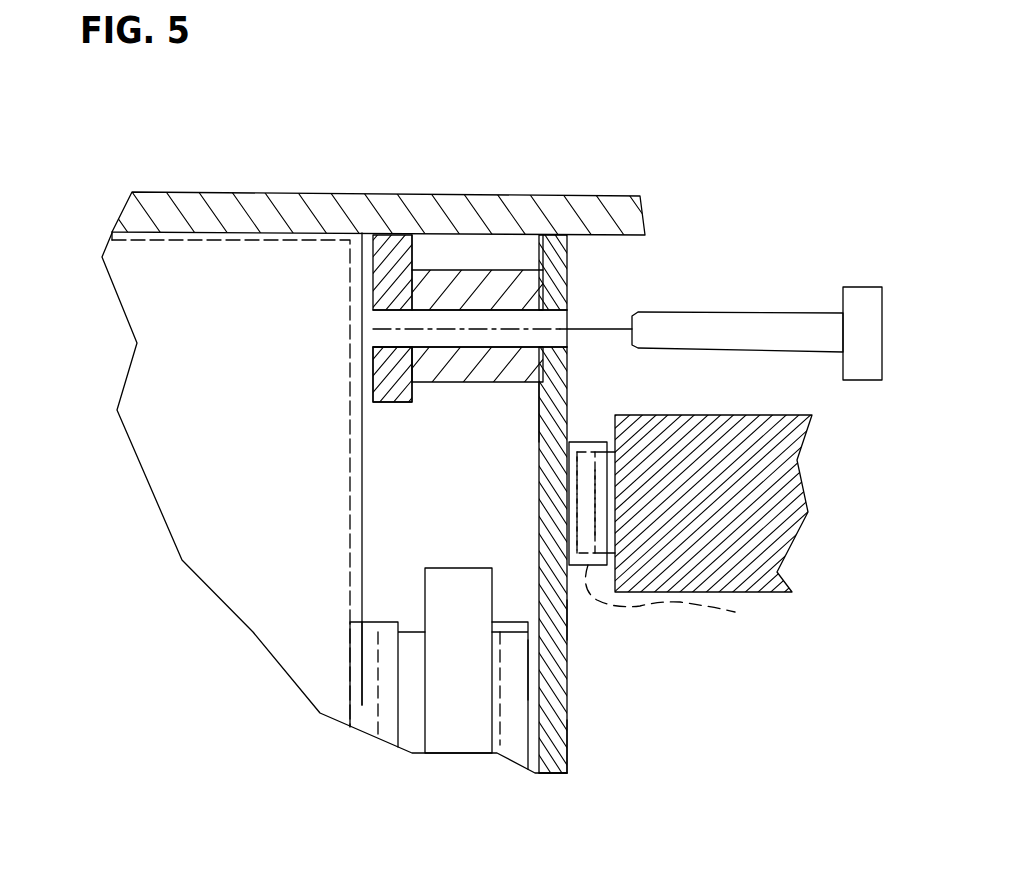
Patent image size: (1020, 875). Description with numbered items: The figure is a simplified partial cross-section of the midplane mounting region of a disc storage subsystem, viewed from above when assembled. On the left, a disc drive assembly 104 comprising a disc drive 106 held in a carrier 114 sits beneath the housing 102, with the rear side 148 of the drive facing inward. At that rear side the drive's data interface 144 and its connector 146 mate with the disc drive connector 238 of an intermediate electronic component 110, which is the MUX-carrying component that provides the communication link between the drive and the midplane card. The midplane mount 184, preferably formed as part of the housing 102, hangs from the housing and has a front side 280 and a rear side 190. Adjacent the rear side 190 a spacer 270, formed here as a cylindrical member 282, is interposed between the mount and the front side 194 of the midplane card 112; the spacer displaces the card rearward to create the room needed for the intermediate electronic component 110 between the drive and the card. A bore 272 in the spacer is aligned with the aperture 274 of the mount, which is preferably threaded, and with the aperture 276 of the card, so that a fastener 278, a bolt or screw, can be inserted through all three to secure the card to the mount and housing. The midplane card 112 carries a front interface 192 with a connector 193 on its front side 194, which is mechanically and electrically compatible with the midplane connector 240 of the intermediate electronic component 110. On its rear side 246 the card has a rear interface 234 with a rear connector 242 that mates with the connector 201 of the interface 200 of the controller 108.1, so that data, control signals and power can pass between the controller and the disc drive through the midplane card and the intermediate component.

The housing 102 is at (240, 193).
The disc drive carrier 114 is at (112, 234).
The disc drive assembly 104 is at (105, 248).
The disc drive 106 is at (158, 368).
The rear side 148 is at (366, 484).
The midplane mount 184 is at (392, 245).
The front side 280 is at (375, 367).
The rear side 190 is at (413, 236).
The cylindrical member 282 is at (450, 275).
The spacer 270 is at (505, 275).
The bore 272 is at (528, 315).
The aperture 274 is at (380, 318).
The front interface 192 is at (520, 710).
The connector 193 is at (521, 674).
The front side 194 is at (545, 426).
The midplane card 112 is at (553, 747).
The aperture 276 is at (570, 318).
The fastener 278 is at (737, 317).
The interface 200 is at (593, 455).
The rear interface 234 is at (577, 468).
The rear connector 242 is at (587, 513).
The controller 108.1 is at (807, 512).
The connector 201 is at (685, 598).
The rear side 246 is at (568, 628).
The intermediate electronic component 110 is at (433, 602).
The disc drive connector 238 is at (412, 733).
The connector 146 is at (367, 708).
The data interface 144 is at (370, 723).
The midplane connector 240 is at (513, 750).